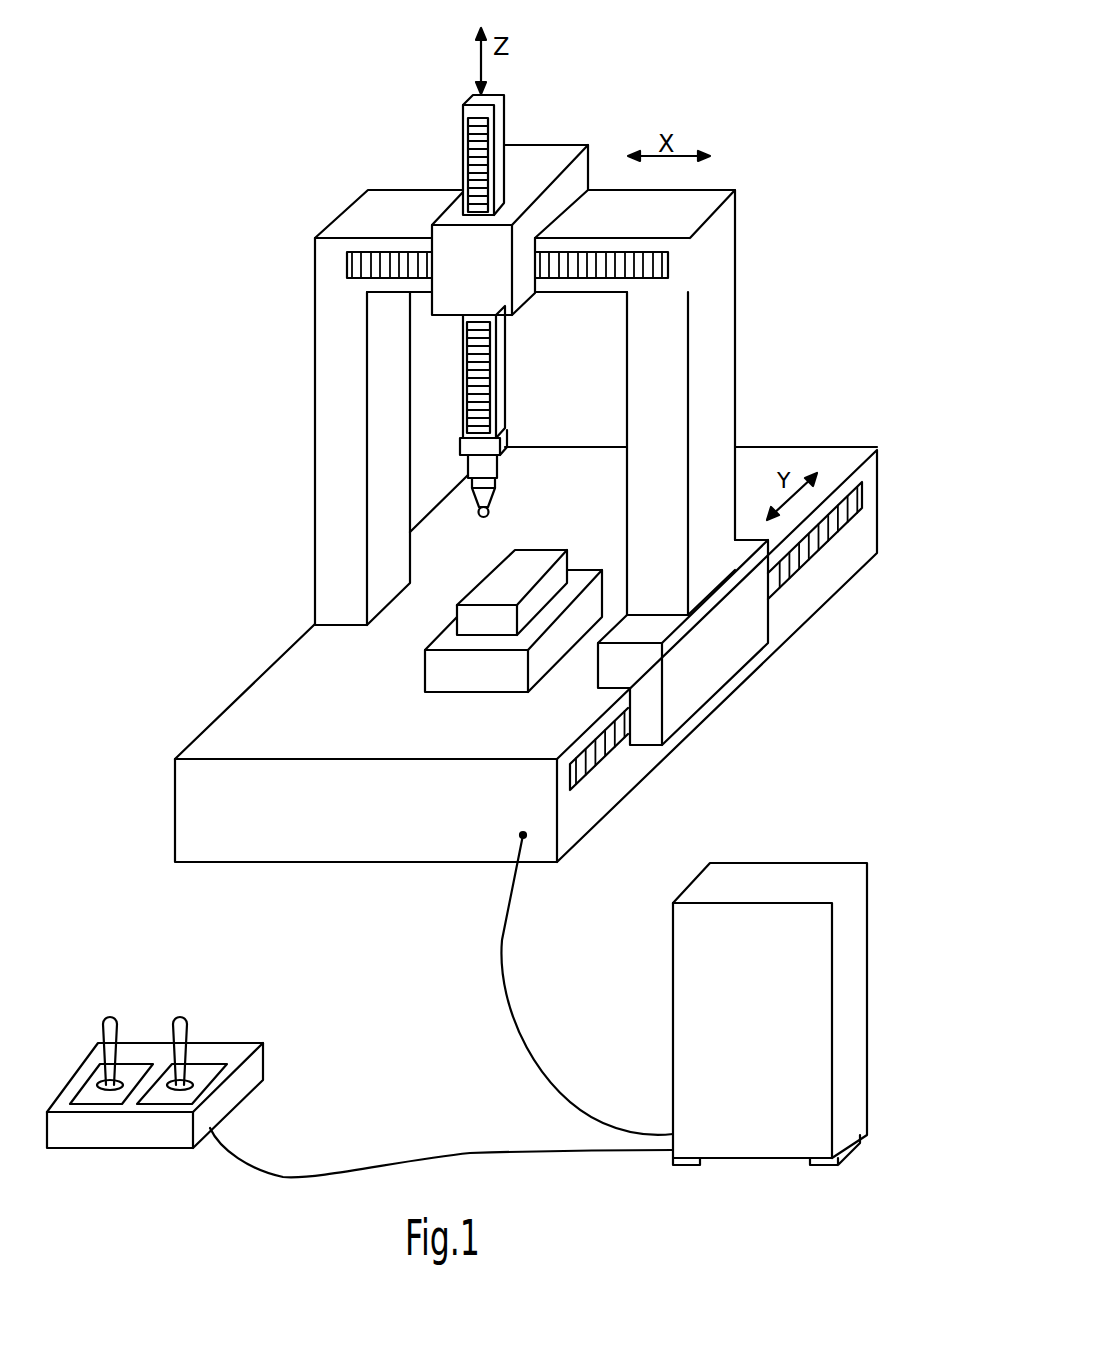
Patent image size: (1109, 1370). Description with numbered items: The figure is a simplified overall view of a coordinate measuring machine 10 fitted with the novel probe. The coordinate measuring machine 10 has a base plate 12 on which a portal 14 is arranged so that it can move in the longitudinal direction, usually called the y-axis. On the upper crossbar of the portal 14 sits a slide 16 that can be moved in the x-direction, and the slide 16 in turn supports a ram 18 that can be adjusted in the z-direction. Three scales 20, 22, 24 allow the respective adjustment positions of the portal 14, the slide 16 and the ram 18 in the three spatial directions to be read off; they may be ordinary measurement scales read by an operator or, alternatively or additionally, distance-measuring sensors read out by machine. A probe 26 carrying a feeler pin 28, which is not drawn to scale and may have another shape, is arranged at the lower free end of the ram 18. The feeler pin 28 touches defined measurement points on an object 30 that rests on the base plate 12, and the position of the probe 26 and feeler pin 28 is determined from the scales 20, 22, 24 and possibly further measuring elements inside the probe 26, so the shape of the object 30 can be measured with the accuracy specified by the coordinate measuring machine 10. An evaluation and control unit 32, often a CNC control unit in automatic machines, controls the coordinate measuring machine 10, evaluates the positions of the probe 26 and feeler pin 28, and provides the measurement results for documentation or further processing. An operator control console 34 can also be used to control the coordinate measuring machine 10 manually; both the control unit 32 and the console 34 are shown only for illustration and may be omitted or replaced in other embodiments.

The coordinate measuring machine 10 is at (810, 132).
The base plate 12 is at (227, 730).
The portal 14 is at (332, 358).
The slide 16 is at (454, 216).
The ram 18 is at (466, 98).
The scale 20 is at (812, 550).
The scale 22 is at (668, 264).
The scale 24 is at (491, 146).
The probe 26 is at (509, 474).
The feeler pin 28 is at (477, 502).
The object 30 is at (493, 592).
The evaluation and control unit 32 is at (778, 887).
The operator control console 34 is at (250, 1027).